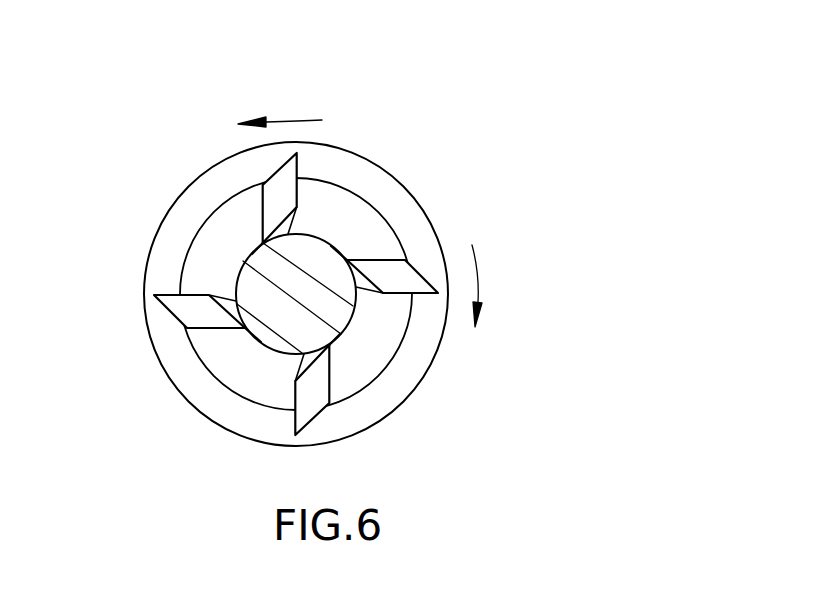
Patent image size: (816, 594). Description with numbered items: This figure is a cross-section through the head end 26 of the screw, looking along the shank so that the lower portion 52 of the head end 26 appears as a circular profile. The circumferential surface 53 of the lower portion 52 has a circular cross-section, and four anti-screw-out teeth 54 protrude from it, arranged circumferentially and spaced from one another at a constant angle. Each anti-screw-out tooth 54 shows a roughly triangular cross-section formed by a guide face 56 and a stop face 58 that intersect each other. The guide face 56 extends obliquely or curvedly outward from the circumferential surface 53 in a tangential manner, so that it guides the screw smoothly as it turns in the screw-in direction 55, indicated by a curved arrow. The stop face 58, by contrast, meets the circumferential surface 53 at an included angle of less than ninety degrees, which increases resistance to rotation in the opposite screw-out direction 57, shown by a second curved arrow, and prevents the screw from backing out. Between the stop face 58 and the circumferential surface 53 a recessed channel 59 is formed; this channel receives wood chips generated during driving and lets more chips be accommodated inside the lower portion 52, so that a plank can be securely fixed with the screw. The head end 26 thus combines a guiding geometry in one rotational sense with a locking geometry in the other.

The head end 26 is at (440, 347).
The lower portion 52 is at (298, 278).
The circumferential surface 53 is at (262, 280).
The anti-screw-out teeth 54 is at (312, 348).
The screw-in direction 55 is at (287, 118).
The guide face 56 is at (291, 222).
The screw-out direction 57 is at (477, 268).
The stop face 58 is at (305, 220).
The recessed channel 59 is at (363, 295).